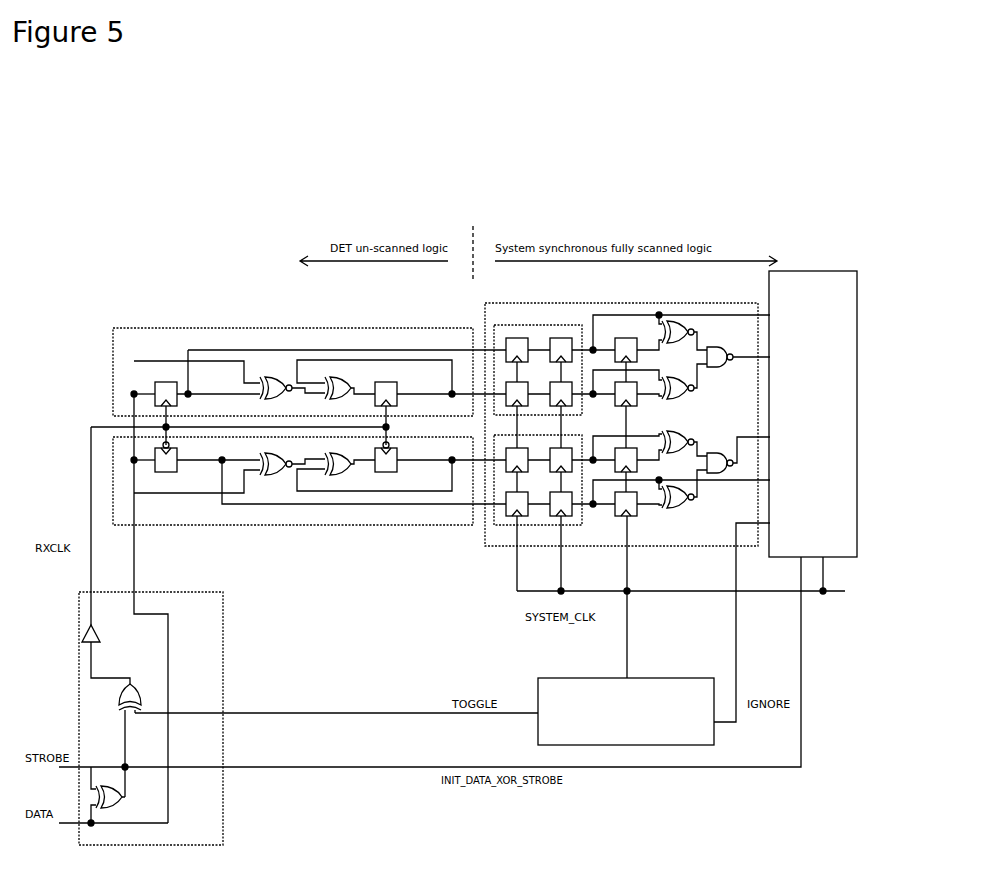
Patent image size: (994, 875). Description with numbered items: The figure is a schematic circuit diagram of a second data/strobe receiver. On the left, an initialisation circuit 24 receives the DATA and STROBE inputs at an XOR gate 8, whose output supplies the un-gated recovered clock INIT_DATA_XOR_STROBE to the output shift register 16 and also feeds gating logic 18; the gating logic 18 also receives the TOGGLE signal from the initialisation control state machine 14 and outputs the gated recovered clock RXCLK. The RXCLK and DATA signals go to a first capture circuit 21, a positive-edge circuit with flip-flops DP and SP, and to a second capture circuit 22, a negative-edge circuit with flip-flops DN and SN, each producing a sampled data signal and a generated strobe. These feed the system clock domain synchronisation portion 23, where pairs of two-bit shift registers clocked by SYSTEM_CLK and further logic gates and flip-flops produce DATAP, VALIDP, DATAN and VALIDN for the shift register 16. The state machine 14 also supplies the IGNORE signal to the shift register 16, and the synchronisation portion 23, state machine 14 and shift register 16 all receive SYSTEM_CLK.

The XOR gate 8 is at (117, 792).
The initialisation control state machine 14 is at (642, 678).
The output shift register 16 is at (803, 271).
The gating logic 18 is at (124, 648).
The first capture circuit 21 is at (293, 372).
The second capture circuit 22 is at (293, 481).
The system clock domain synchronisation portion 23 is at (627, 424).
The initialisation circuit 24 is at (151, 718).